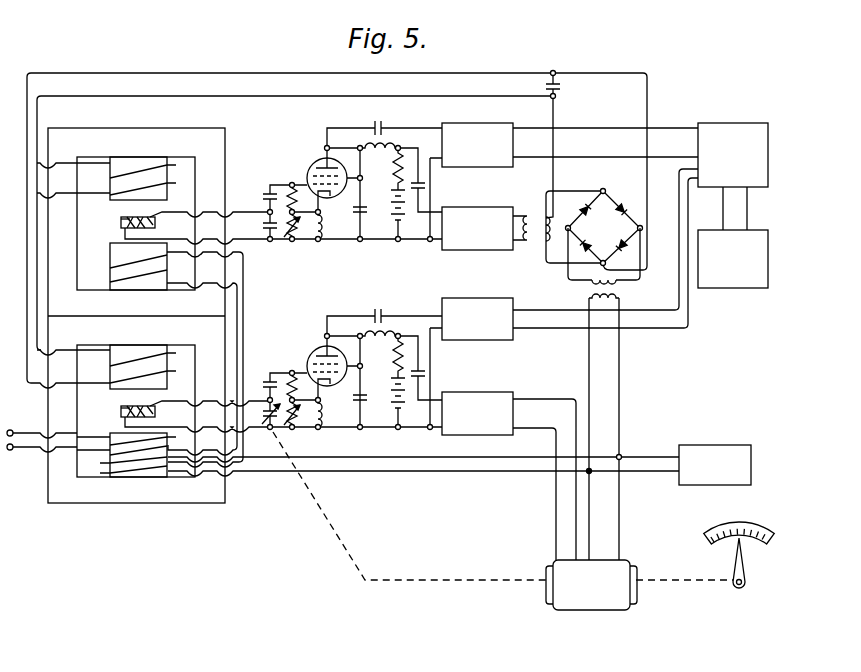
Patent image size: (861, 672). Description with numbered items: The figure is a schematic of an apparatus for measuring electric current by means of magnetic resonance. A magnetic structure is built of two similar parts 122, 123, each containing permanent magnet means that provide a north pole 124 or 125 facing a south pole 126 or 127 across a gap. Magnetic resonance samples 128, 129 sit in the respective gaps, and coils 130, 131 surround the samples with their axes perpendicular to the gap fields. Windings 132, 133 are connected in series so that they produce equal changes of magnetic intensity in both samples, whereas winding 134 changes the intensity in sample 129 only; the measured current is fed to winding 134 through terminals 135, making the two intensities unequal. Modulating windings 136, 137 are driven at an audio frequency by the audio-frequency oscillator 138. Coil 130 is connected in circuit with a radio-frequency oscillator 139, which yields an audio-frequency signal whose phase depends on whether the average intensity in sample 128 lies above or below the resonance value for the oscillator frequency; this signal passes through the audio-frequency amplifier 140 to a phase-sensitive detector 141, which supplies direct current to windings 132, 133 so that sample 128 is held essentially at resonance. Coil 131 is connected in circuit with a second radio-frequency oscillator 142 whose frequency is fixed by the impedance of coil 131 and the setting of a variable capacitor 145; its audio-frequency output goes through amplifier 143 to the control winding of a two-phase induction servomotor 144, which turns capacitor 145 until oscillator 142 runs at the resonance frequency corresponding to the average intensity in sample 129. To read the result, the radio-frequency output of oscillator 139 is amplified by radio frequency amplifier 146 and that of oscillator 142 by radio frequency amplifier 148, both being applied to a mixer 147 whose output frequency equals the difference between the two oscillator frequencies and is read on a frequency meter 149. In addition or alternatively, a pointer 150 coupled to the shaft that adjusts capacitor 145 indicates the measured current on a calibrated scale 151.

The magnetic structure part 122 is at (55, 248).
The magnetic structure part 123 is at (55, 402).
The north pole 124 is at (166, 190).
The north pole 125 is at (166, 378).
The south pole 126 is at (115, 248).
The south pole 127 is at (114, 432).
The magnetic resonance sample 128 is at (160, 222).
The magnetic resonance sample 129 is at (160, 410).
The coil 130 is at (125, 218).
The coil 131 is at (127, 407).
The winding 132 is at (108, 180).
The winding 133 is at (108, 368).
The winding 134 is at (171, 436).
The terminals 135 is at (10, 436).
The modulating winding 136 is at (108, 270).
The modulating winding 137 is at (108, 462).
The audio-frequency oscillator 138 is at (712, 445).
The radio-frequency oscillator 139 is at (316, 162).
The audio-frequency amplifier 140 is at (478, 207).
The phase-sensitive detector 141 is at (594, 375).
The radio-frequency oscillator 142 is at (319, 350).
The amplifier 143 is at (484, 392).
The two-phase induction servomotor 144 is at (590, 610).
The variable capacitor 145 is at (272, 432).
The radio frequency amplifier 146 is at (505, 123).
The mixer 147 is at (733, 123).
The radio frequency amplifier 148 is at (482, 298).
The frequency meter 149 is at (742, 288).
The pointer 150 is at (745, 562).
The scale 151 is at (757, 527).